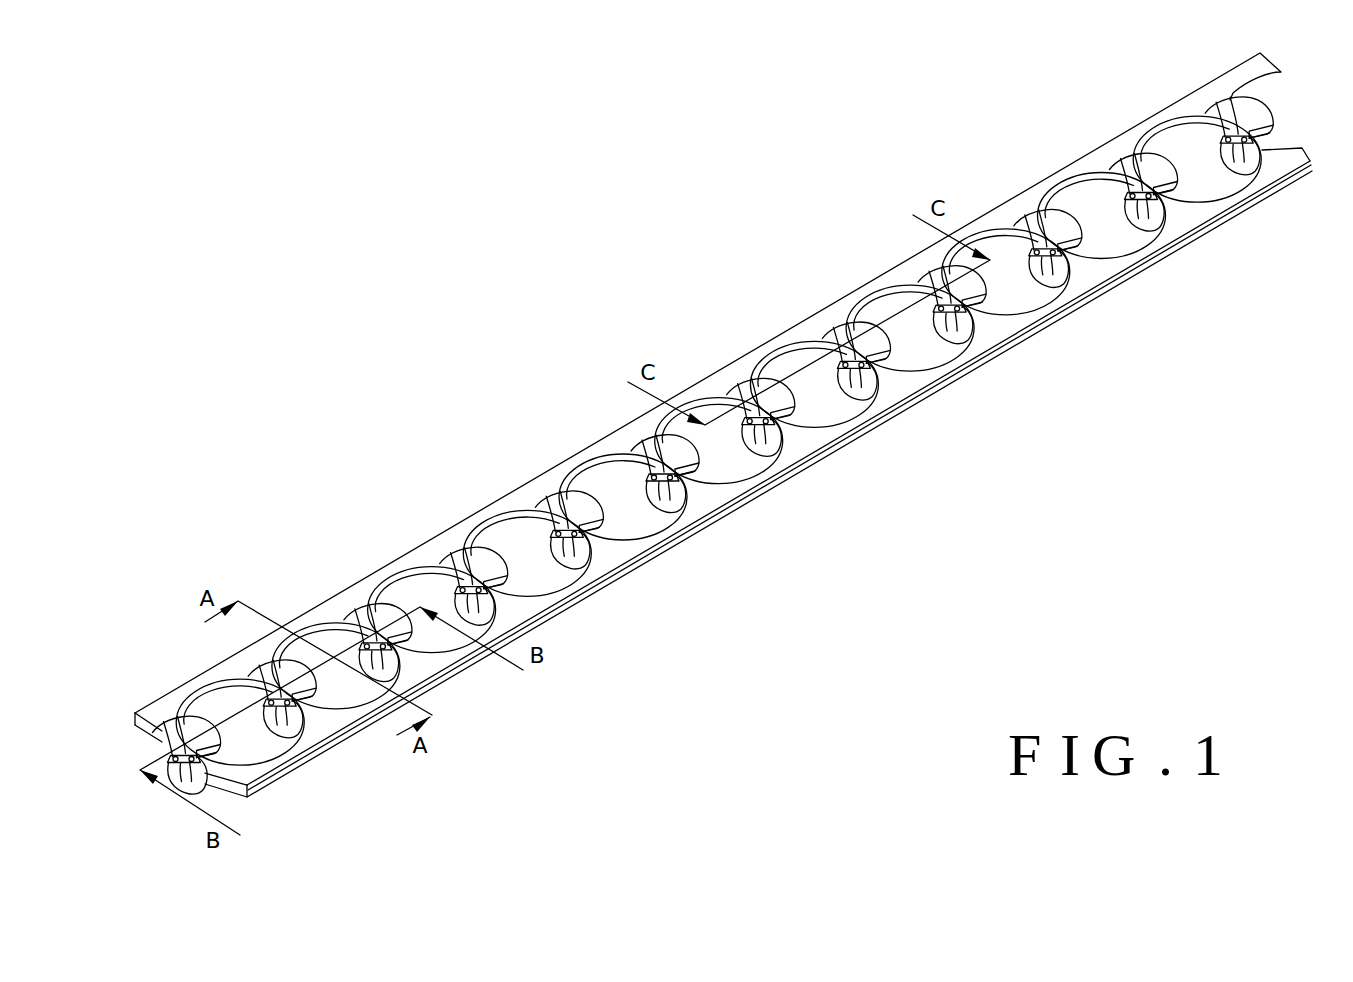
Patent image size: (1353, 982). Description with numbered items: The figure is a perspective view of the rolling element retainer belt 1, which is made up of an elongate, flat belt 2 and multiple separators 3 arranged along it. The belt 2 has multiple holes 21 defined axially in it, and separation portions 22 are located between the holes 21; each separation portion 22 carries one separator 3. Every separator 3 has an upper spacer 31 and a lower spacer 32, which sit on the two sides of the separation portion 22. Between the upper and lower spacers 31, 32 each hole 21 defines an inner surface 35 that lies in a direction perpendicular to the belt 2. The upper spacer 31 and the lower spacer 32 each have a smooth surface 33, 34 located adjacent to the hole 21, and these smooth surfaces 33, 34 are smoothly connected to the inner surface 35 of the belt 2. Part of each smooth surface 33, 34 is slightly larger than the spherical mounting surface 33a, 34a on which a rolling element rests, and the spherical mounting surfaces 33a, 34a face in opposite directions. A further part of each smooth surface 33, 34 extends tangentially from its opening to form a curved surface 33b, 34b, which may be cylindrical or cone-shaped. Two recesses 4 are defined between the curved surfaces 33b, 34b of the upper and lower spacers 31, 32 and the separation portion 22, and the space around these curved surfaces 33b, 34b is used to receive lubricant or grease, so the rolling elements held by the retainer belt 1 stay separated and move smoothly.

The rolling element retainer belt 1 is at (723, 425).
The belt 2 is at (427, 557).
The separator 3 is at (694, 478).
The recess 4 is at (1012, 342).
The hole 21 is at (745, 460).
The separation portion 22 is at (687, 480).
The upper spacer 31 is at (615, 482).
The lower spacer 32 is at (582, 513).
The smooth surface 33 is at (605, 361).
The spherical mounting surface 33a is at (625, 463).
The curved surface 33b is at (645, 465).
The smooth surface 34 is at (747, 575).
The spherical mounting surface 34a is at (687, 483).
The curved surface 34b is at (652, 478).
The inner surface 35 is at (495, 520).